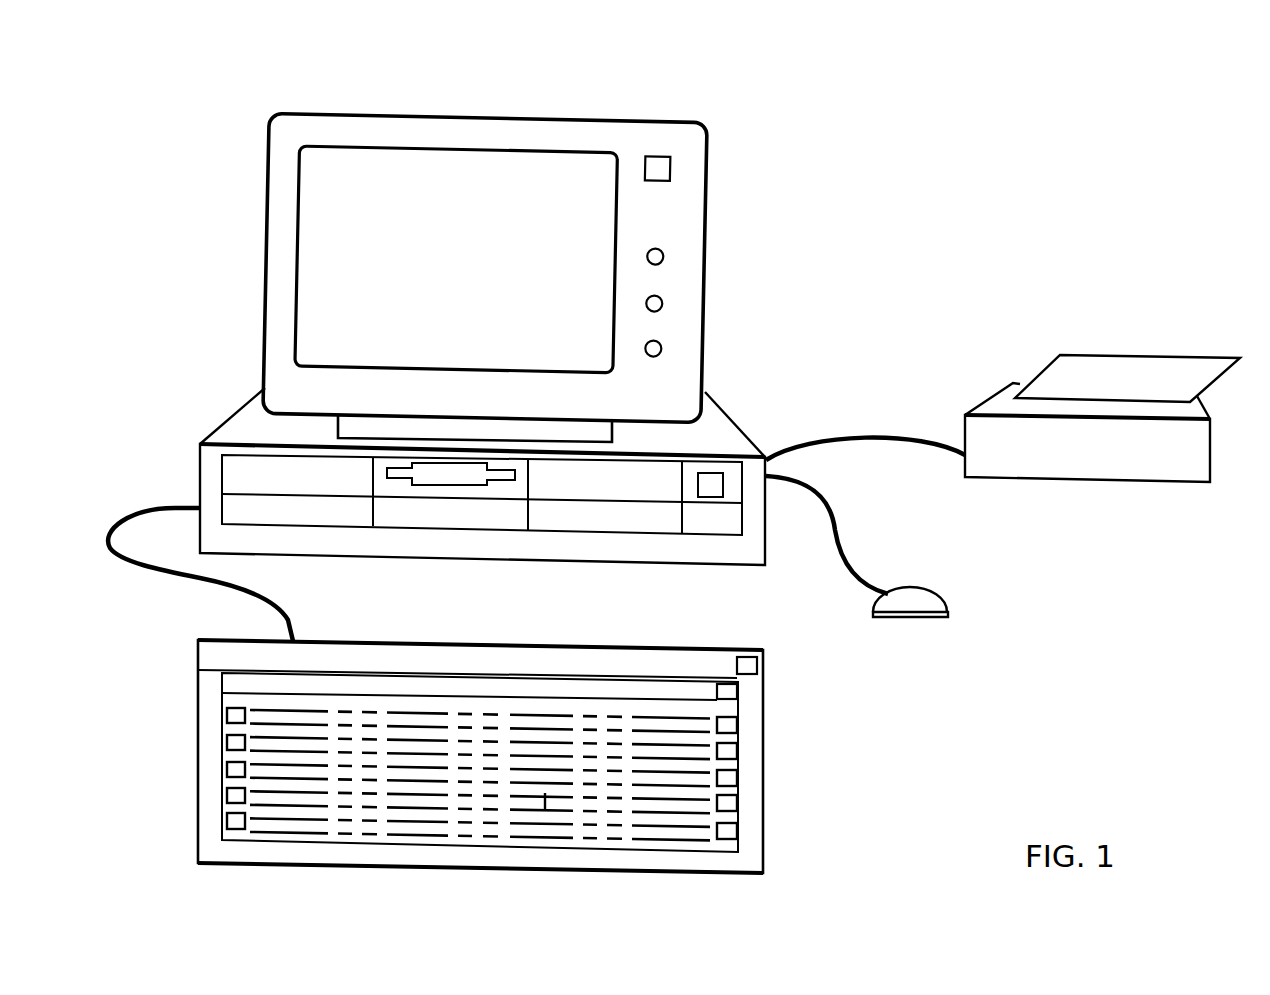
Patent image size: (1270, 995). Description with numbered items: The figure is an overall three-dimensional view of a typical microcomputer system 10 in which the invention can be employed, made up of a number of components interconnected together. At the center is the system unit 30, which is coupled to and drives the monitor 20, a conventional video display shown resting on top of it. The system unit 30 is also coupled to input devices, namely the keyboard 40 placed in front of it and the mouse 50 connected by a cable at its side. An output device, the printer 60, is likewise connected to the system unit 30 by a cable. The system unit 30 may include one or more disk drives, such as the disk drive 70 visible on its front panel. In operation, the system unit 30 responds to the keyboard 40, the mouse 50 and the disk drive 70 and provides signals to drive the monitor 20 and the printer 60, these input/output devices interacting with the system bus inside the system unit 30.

The microcomputer system 10 is at (817, 170).
The monitor 20 is at (513, 120).
The system unit 30 is at (733, 412).
The keyboard 40 is at (763, 795).
The mouse 50 is at (908, 588).
The printer 60 is at (1067, 481).
The disk drive 70 is at (403, 483).